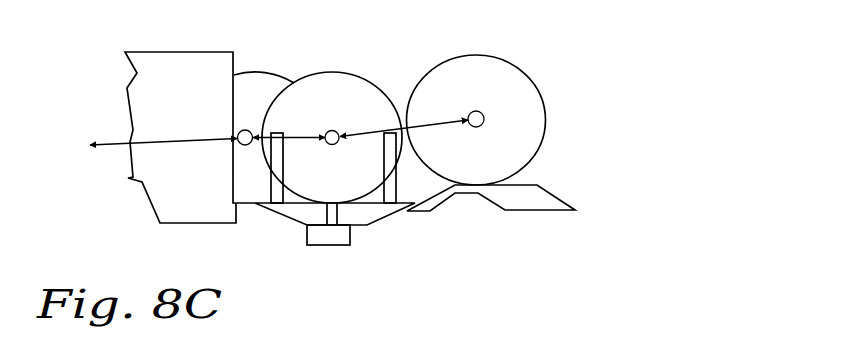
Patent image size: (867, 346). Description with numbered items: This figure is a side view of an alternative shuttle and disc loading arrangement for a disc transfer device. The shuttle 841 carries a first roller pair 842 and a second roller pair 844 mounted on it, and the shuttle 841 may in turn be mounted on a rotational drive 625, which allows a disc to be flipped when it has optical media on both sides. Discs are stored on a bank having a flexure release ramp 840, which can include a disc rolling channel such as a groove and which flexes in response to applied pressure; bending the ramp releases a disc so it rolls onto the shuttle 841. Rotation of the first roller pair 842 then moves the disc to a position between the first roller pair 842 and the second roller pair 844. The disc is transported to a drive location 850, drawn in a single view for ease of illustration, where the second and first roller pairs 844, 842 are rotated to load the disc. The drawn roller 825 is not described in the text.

The drive location 850 is at (217, 57).
The roller 825 is at (348, 87).
The second roller pair 844 is at (277, 204).
The first roller pair 842 is at (388, 205).
The shuttle 841 is at (298, 218).
The rotational drive 625 is at (330, 241).
The flexure release ramp 840 is at (427, 213).